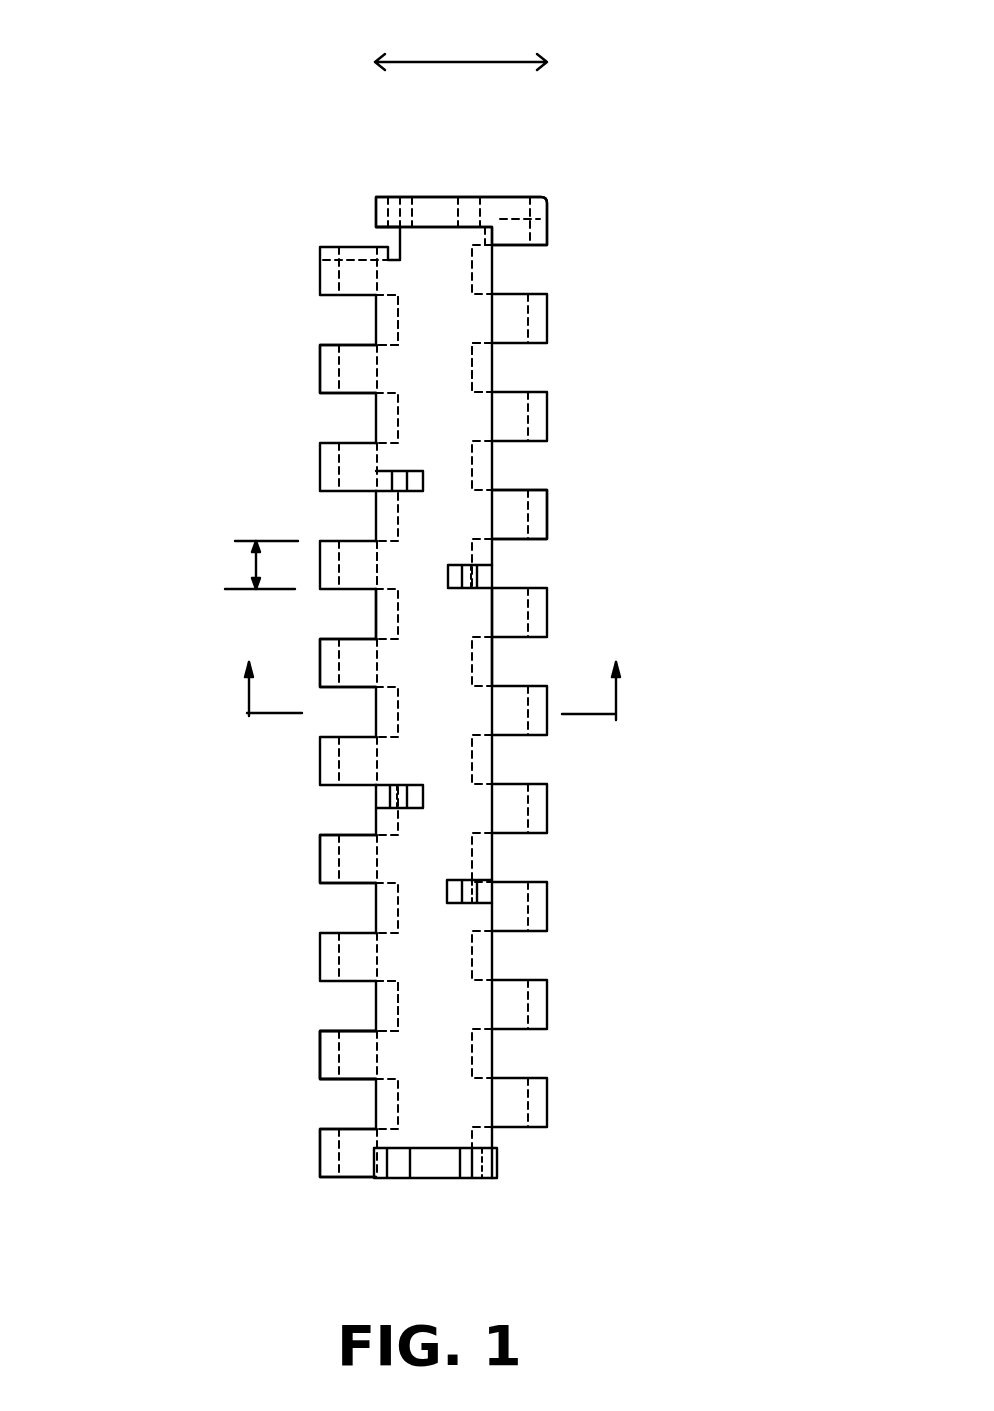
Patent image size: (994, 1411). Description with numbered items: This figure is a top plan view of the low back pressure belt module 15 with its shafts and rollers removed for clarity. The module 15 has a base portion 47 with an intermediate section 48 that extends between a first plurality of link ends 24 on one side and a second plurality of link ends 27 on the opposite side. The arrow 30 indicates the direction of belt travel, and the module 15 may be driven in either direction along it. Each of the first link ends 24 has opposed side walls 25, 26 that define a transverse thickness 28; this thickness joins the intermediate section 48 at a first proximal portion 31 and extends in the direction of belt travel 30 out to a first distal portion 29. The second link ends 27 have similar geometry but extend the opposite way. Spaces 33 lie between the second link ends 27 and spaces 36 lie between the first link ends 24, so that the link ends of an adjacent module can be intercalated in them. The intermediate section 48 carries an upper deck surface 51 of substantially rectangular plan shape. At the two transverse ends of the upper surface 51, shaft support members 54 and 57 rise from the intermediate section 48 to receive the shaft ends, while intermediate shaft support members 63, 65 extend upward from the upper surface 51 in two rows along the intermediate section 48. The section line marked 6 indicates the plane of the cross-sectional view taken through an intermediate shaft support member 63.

The low back pressure belt module 15 is at (685, 240).
The direction of belt travel 30 is at (498, 58).
The shaft support member 57 is at (435, 210).
The space 36 is at (334, 326).
The first plurality of link ends 24 is at (317, 367).
The intermediate shaft support member 65 is at (417, 470).
The space 33 is at (529, 373).
The second plurality of link ends 27 is at (548, 507).
The intermediate shaft support member 63 is at (452, 565).
The transverse thickness 28 is at (253, 562).
The first proximal portion 31 is at (377, 560).
The first distal portion 29 is at (308, 664).
The intermediate section 48 is at (448, 677).
The section line 6- 6 is at (432, 691).
The upper deck surface 51 is at (427, 852).
The base portion 47 is at (300, 1009).
The side wall 26 is at (337, 1031).
The side wall 25 is at (340, 1081).
The shaft support member 54 is at (442, 1169).